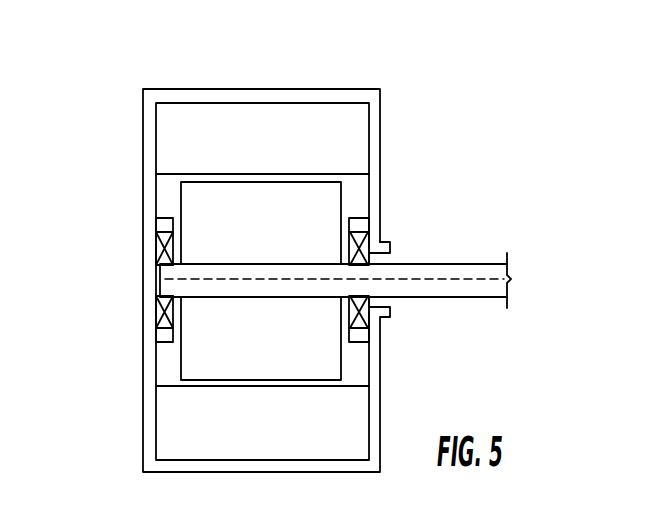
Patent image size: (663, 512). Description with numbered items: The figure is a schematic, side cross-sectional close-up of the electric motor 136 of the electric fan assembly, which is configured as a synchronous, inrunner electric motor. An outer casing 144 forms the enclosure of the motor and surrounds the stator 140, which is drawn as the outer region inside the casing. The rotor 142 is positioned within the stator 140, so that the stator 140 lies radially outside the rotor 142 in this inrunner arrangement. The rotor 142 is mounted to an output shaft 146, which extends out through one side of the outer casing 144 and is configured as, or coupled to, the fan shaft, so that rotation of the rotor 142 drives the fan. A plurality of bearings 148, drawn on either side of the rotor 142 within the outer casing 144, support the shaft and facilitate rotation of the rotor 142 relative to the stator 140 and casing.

The electric motor 136 is at (458, 107).
The stator 140 is at (180, 143).
The rotor 142 is at (197, 203).
The outer casing 144 is at (330, 89).
The output shaft 146 is at (422, 263).
The bearings 148 is at (157, 316).